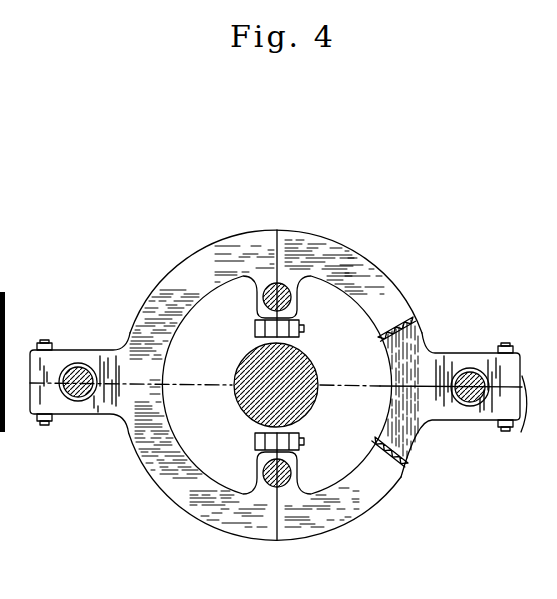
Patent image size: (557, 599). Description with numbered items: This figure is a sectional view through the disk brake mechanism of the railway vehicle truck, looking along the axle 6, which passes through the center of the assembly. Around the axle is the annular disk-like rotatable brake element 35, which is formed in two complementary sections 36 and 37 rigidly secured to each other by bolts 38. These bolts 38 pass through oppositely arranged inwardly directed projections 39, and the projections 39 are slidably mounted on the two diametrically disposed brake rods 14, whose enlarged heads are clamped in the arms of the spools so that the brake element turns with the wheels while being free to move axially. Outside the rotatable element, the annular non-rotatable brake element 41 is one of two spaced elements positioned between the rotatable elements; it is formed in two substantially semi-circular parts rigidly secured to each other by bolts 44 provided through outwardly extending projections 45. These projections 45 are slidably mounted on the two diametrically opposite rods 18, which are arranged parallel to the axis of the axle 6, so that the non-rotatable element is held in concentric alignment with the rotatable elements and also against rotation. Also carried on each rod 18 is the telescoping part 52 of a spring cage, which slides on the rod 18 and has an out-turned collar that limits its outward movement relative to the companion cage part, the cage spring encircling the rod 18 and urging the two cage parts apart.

The axle 6 is at (251, 406).
The brake rod 14 is at (286, 297).
The rod 18 is at (86, 366).
The brake element 35 is at (349, 271).
The complementary section 36 is at (304, 241).
The complementary section 37 is at (247, 246).
The bolt 38 is at (304, 328).
The inwardly directed projection 39 is at (258, 303).
The non-rotatable brake element 41 is at (414, 400).
The bolt 44 is at (50, 338).
The outwardly extending projection 45 is at (44, 394).
The telescoping part 52 is at (78, 400).